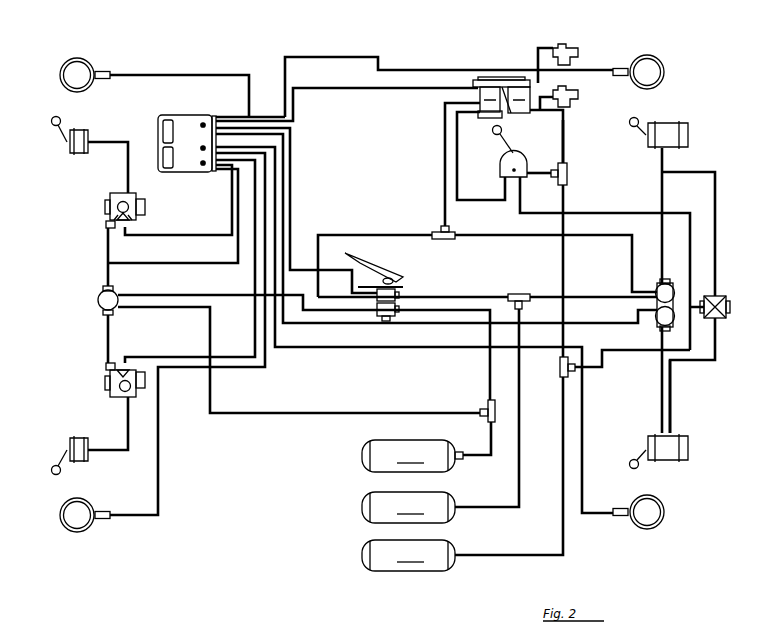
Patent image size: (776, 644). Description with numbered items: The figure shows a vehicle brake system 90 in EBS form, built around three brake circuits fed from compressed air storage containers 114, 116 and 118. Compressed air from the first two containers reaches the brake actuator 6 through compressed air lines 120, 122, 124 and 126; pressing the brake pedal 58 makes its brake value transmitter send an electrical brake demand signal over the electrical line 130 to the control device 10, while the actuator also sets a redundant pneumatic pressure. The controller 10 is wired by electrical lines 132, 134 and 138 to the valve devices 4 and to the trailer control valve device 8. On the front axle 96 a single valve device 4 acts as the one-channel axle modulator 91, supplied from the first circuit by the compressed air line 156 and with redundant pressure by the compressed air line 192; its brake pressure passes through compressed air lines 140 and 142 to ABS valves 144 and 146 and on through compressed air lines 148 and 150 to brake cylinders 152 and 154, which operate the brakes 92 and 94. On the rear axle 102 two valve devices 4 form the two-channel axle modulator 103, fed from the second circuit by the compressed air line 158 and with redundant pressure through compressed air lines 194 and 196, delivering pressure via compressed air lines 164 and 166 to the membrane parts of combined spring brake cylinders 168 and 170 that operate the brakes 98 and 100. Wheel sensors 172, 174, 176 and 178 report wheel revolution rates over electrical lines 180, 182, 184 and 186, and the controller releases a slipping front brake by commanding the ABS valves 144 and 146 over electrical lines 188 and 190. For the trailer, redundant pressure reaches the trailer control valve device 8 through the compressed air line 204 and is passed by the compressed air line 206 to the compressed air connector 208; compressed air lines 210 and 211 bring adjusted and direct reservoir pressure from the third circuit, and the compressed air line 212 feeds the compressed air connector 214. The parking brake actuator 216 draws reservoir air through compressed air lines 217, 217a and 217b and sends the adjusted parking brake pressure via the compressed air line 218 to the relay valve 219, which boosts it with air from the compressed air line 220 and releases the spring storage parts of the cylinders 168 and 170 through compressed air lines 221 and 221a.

The valve device 4 is at (90, 310).
The brake actuator 6 is at (408, 266).
The trailer control valve device 8 is at (500, 115).
The control device 10 is at (182, 172).
The brake pedal 58 is at (400, 266).
The brake system 90 is at (386, 27).
The 1-channel axle modulator 91 is at (98, 300).
The brake 92 is at (55, 103).
The brake 94 is at (55, 495).
The front axle 96 is at (75, 32).
The brake 98 is at (686, 102).
The brake 100 is at (687, 487).
The rear axle 102 is at (654, 33).
The 2-channel axle modulator 103 is at (675, 285).
The compressed air storage container 114 is at (412, 456).
The compressed air storage container 116 is at (408, 507).
The compressed air storage container 118 is at (408, 555).
The compressed air line 120 is at (487, 432).
The compressed air line 122 is at (487, 378).
The compressed air line 124 is at (522, 480).
The compressed air line 126 is at (480, 296).
The electrical line 130 is at (336, 270).
The electrical line 132 is at (190, 264).
The electrical line 134 is at (432, 326).
The electrical line 138 is at (331, 88).
The compressed air line 140 is at (106, 256).
The compressed air line 142 is at (107, 342).
The ABS valve 144 is at (106, 208).
The ABS valve 146 is at (106, 382).
The compressed air line 148 is at (126, 173).
The compressed air line 150 is at (125, 424).
The brake cylinder 152 is at (66, 154).
The brake cylinder 154 is at (69, 437).
The compressed air line 156 is at (288, 412).
The compressed air line 158 is at (590, 300).
The compressed air line 164 is at (668, 186).
The compressed air line 166 is at (658, 412).
The combined spring brake cylinder 168 is at (690, 138).
The combined spring brake cylinder 170 is at (690, 450).
The wheel sensor 172 is at (89, 62).
The wheel sensor 174 is at (90, 502).
The wheel sensor 176 is at (665, 62).
The wheel sensor 178 is at (660, 526).
The electrical line 180 is at (174, 74).
The electrical line 182 is at (136, 518).
The electrical line 184 is at (442, 68).
The electrical line 186 is at (598, 514).
The electrical line 188 is at (180, 235).
The electrical line 190 is at (172, 357).
The compressed air line 192 is at (345, 312).
The compressed air line 194 is at (393, 234).
The compressed air line 196 is at (474, 234).
The compressed air line 204 is at (443, 183).
The compressed air line 206 is at (536, 62).
The compressed air connector 208 is at (575, 54).
The compressed air line 210 is at (457, 163).
The compressed air line 211 is at (563, 148).
The compressed air line 212 is at (542, 112).
The compressed air connector 214 is at (578, 107).
The parking brake actuator 216 is at (524, 158).
The compressed air line 217 is at (556, 180).
The compressed air line 217a is at (561, 268).
The compressed air line 217b is at (561, 528).
The compressed air line 218 is at (607, 213).
The relay valve 219 is at (728, 298).
The compressed air line 220 is at (616, 358).
The compressed air line 221 is at (722, 212).
The compressed air line 221a is at (676, 388).